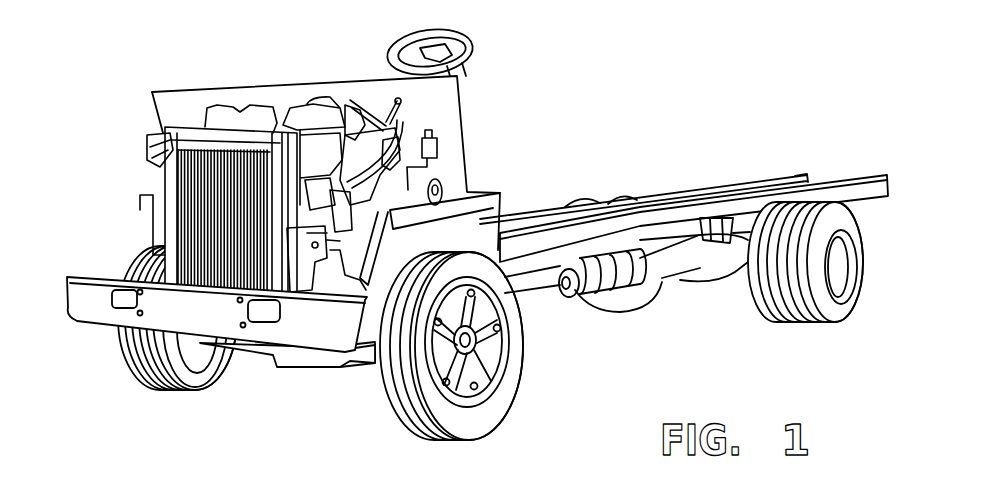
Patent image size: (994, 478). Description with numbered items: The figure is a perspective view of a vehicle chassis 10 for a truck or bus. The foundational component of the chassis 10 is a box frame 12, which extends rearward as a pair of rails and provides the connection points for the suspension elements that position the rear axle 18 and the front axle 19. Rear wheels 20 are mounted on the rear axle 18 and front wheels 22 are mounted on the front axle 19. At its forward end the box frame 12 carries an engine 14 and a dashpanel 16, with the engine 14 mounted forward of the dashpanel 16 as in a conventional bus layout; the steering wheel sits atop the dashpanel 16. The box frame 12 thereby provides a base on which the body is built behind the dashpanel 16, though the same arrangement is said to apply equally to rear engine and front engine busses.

The vehicle chassis 10 is at (685, 77).
The box frame 12 is at (646, 203).
The engine 14 is at (223, 120).
The dashpanel 16 is at (467, 138).
The rear axle 18 is at (722, 267).
The front axle 19 is at (330, 370).
The rear wheels 20 is at (858, 290).
The front wheels 22 is at (207, 363).